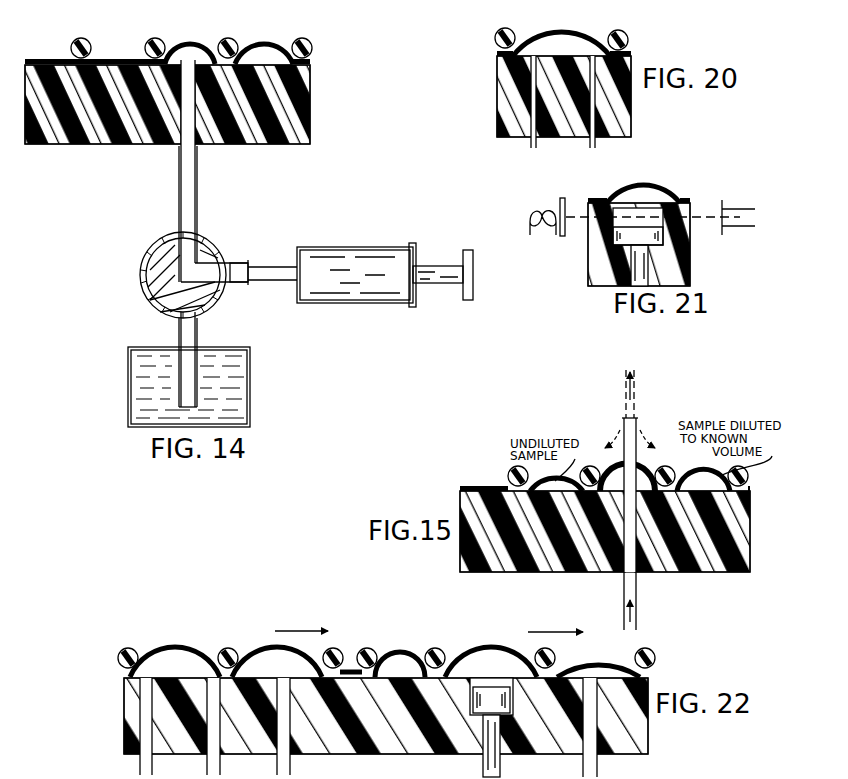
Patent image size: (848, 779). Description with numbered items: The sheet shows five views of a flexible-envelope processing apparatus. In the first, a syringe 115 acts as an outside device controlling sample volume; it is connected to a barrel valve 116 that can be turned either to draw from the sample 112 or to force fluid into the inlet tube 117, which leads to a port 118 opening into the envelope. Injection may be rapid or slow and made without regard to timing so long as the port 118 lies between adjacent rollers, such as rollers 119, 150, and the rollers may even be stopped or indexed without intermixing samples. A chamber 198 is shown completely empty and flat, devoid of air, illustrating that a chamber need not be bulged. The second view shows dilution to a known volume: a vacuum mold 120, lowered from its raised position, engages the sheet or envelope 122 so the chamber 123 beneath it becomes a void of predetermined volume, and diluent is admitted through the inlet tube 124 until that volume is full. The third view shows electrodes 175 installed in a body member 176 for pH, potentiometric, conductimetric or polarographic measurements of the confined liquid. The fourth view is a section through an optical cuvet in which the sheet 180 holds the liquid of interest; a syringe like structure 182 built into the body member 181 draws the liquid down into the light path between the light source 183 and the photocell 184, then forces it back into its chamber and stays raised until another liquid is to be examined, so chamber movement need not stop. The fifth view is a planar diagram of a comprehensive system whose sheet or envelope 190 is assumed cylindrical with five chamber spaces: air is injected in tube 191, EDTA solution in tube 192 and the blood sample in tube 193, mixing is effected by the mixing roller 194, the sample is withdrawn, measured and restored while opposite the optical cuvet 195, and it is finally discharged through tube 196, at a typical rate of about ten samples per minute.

In FIG. 14, the chamber 198 is at (118, 58).
In FIG. 14, the roller 119 is at (160, 40).
In FIG. 14, the roller 150 is at (216, 45).
In FIG. 14, the port 118 is at (188, 62).
In FIG. 14, the inlet tube 117 is at (197, 177).
In FIG. 14, the barrel valve 116 is at (212, 252).
In FIG. 14, the syringe 115 is at (366, 242).
In FIG. 14, the sample 112 is at (242, 372).
In FIG. 20, the body member 176 is at (635, 134).
In FIG. 20, the electrodes 175 is at (590, 144).
In FIG. 21, the body member 181 is at (690, 267).
In FIG. 21, the sheet 180 is at (648, 198).
In FIG. 21, the light source 183 is at (561, 256).
In FIG. 21, the photocell 184 is at (728, 209).
In FIG. 21, the syringe like structure 182 is at (637, 286).
In FIG. 15, the sheet or envelope 122 is at (648, 492).
In FIG. 15, the chamber 123 is at (636, 481).
In FIG. 15, the vacuum mold 120 is at (650, 403).
In FIG. 15, the inlet tube 124 is at (636, 588).
In FIG. 22, the sheet or envelope 190 is at (181, 651).
In FIG. 22, the mixing roller 194 is at (362, 648).
In FIG. 22, the tube 191 is at (152, 765).
In FIG. 22, the tube 192 is at (220, 765).
In FIG. 22, the tube 193 is at (290, 765).
In FIG. 22, the optical cuvet 195 is at (480, 664).
In FIG. 22, the tube 196 is at (597, 766).